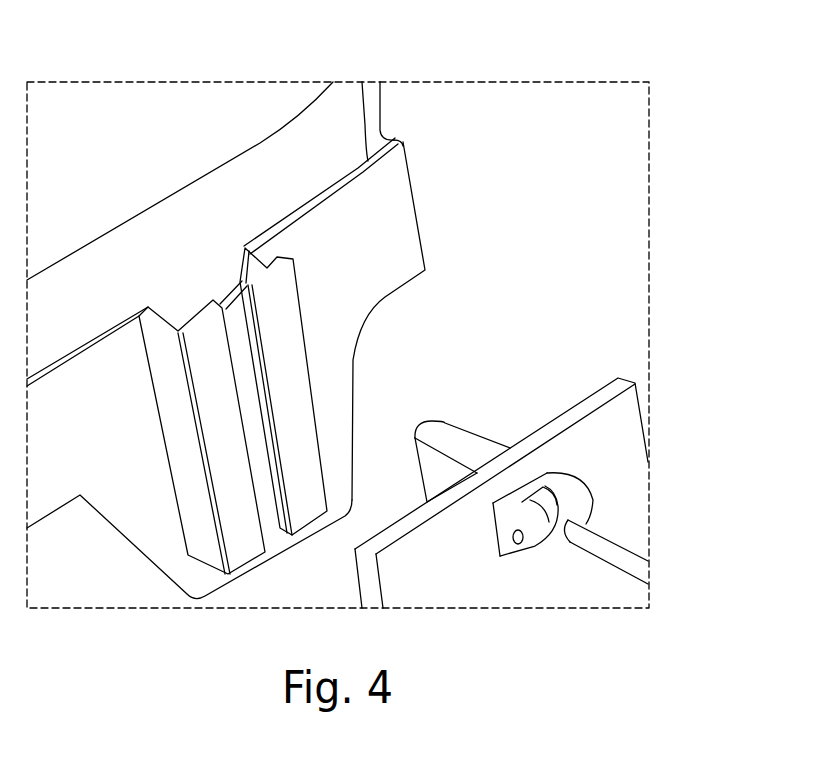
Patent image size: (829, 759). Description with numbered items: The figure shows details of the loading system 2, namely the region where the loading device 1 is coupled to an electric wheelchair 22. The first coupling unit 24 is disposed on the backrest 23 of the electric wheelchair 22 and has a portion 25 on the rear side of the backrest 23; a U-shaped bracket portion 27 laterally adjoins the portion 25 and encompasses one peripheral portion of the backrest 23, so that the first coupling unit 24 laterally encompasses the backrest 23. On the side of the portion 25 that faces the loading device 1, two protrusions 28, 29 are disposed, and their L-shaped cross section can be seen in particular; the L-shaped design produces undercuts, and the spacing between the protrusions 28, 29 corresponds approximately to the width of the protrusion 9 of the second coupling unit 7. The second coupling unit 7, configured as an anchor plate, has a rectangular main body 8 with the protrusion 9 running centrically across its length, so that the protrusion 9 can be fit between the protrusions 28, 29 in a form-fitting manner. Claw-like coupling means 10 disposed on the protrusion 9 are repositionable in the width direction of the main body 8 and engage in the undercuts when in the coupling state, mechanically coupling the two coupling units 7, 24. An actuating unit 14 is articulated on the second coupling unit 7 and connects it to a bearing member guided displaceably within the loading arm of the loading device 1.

The loading device 1 is at (509, 454).
The loading system 2 is at (553, 108).
The second coupling unit 7 is at (542, 454).
The main body 8 is at (620, 445).
The protrusion 9 is at (450, 440).
The coupling means 10 is at (435, 476).
The actuating unit 14 is at (627, 560).
The electric wheelchair 22 is at (381, 109).
The backrest 23 is at (162, 248).
The first coupling unit 24 is at (442, 261).
The portion 25 is at (390, 220).
The bracket portion 27 is at (400, 135).
The protrusion 28 is at (207, 353).
The protrusion 29 is at (273, 300).